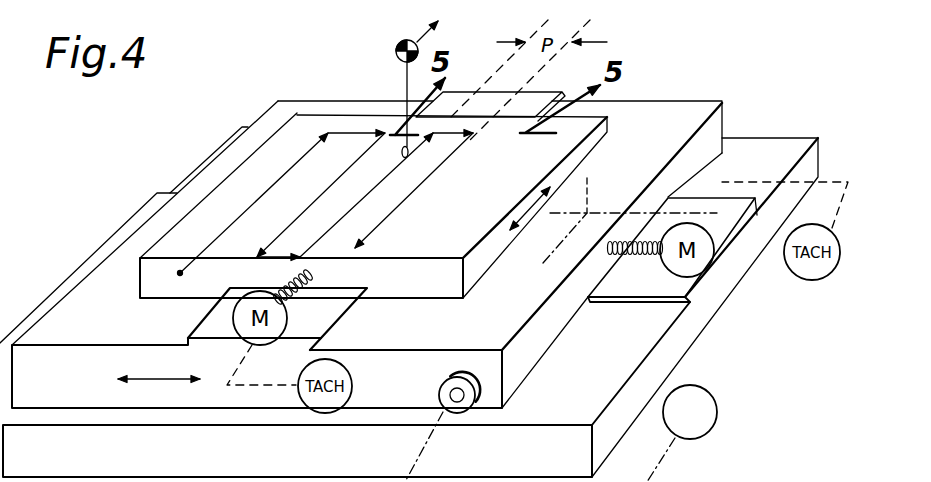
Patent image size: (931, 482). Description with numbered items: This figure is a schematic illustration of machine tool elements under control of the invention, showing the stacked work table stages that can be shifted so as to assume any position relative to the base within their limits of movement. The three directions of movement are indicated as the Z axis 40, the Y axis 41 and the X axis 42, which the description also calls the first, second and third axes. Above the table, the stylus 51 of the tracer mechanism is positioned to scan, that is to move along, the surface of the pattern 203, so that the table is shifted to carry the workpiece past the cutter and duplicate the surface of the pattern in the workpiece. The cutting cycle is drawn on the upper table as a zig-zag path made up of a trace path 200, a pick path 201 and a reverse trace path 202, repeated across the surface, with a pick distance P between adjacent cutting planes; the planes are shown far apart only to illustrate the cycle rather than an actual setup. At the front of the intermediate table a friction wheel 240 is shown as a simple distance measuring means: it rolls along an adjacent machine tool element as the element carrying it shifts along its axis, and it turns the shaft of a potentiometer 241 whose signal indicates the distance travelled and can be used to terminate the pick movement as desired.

The trace path 200 is at (365, 196).
The pick path 201 is at (452, 134).
The reverse trace path 202 is at (422, 186).
The pattern 203 is at (592, 112).
The stylus 51 is at (406, 83).
The Z axis 40 is at (588, 192).
The Y axis 41 is at (610, 212).
The X axis 42 is at (587, 213).
The friction wheel 240 is at (457, 376).
The potentiometer 241 is at (717, 414).